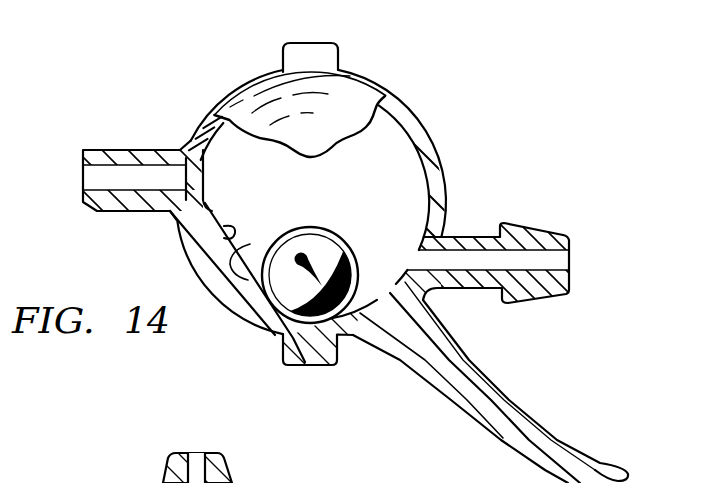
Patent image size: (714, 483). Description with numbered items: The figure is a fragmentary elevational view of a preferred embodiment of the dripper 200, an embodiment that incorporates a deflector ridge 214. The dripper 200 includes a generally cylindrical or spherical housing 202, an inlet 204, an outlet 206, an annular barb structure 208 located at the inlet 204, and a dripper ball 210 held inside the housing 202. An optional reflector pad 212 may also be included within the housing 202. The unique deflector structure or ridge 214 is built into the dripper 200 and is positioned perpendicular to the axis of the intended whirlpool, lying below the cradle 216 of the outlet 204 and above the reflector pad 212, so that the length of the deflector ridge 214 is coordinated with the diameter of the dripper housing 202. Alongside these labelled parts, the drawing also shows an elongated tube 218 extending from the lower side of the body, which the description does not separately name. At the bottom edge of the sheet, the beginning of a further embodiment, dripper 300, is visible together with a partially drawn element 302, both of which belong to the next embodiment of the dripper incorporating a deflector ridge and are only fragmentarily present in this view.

The dripper 200 is at (446, 62).
The housing 202 is at (343, 72).
The inlet 204 is at (557, 202).
The outlet 206 is at (112, 147).
The annular barb structure 208 is at (508, 222).
The dripper ball 210 is at (330, 233).
The reflector pad 212 is at (226, 262).
The deflector ridge 214 is at (231, 225).
The cradle 216 is at (214, 199).
The tube 218 is at (466, 412).
The dripper 300 is at (58, 482).
The fitting 302 is at (227, 468).